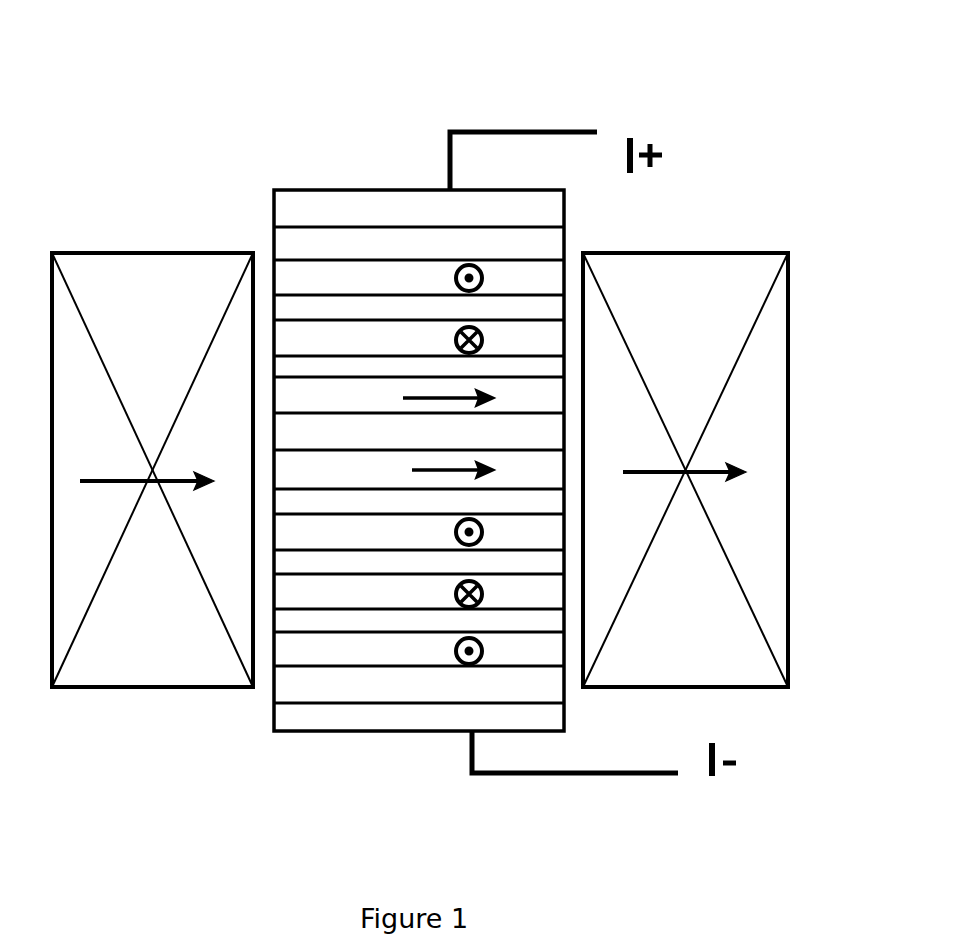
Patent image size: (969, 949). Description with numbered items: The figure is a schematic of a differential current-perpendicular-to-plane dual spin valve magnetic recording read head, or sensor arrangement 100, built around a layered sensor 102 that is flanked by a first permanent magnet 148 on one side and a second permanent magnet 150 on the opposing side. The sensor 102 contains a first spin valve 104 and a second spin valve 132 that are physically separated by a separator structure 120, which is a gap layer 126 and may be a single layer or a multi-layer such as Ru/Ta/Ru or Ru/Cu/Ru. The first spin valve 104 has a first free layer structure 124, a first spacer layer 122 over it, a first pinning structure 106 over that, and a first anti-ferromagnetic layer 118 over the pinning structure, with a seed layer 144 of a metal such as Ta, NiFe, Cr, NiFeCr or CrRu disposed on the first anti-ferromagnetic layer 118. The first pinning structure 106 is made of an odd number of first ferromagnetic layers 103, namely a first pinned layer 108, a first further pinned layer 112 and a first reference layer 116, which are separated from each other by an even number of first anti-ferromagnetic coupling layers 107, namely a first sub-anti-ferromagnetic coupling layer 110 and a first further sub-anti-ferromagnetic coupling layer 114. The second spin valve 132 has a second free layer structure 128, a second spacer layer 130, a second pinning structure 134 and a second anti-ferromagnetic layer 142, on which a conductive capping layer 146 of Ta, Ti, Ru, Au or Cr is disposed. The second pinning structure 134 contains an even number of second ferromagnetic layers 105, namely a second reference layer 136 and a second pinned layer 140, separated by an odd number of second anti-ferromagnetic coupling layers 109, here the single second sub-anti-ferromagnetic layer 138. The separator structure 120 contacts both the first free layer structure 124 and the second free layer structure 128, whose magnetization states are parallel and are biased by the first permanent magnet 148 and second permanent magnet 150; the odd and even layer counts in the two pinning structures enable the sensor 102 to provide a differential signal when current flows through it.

The sensor arrangement 100 is at (185, 53).
The sensor 102 is at (568, 88).
The first ferromagnetic layers 103 is at (361, 592).
The first spin valve 104 is at (544, 453).
The second ferromagnetic layers 105 is at (361, 310).
The first pinning structure 106 is at (488, 666).
The first anti-ferromagnetic coupling layers 107 is at (361, 594).
The first pinned layer 108 is at (308, 650).
The second anti-ferromagnetic coupling layers 109 is at (361, 308).
The first sub-anti-ferromagnetic coupling layer 110 is at (308, 620).
The first further pinned layer 112 is at (308, 592).
The first further sub-anti-ferromagnetic coupling layer 114 is at (308, 565).
The first reference layer 116 is at (308, 530).
The first anti-ferromagnetic layer 118 is at (308, 686).
The separator structure 120 is at (361, 432).
The first spacer layer 122 is at (308, 503).
The first free layer structure 124 is at (308, 471).
The gap layer 126 is at (308, 430).
The second free layer structure 128 is at (308, 395).
The second spacer layer 130 is at (308, 370).
The second spin valve 132 is at (544, 413).
The second pinning structure 134 is at (490, 262).
The second reference layer 136 is at (308, 333).
The second sub-anti-ferromagnetic layer 138 is at (308, 308).
The second pinned layer 140 is at (308, 284).
The second anti-ferromagnetic layer 142 is at (308, 246).
The seed layer 144 is at (308, 718).
The capping layer 146 is at (308, 212).
The first permanent magnet 148 is at (120, 660).
The second permanent magnet 150 is at (677, 650).